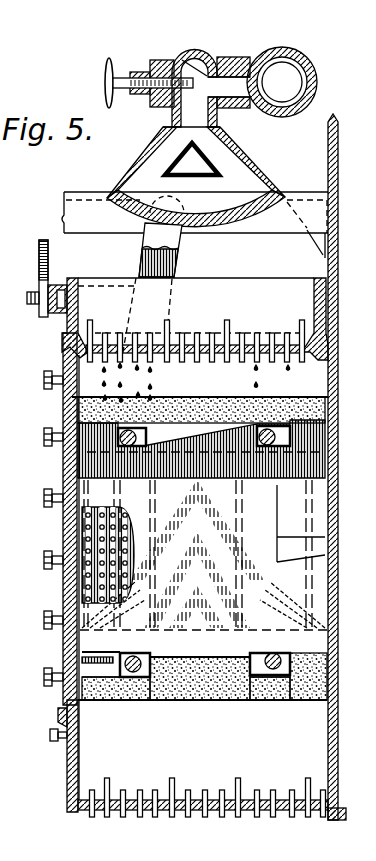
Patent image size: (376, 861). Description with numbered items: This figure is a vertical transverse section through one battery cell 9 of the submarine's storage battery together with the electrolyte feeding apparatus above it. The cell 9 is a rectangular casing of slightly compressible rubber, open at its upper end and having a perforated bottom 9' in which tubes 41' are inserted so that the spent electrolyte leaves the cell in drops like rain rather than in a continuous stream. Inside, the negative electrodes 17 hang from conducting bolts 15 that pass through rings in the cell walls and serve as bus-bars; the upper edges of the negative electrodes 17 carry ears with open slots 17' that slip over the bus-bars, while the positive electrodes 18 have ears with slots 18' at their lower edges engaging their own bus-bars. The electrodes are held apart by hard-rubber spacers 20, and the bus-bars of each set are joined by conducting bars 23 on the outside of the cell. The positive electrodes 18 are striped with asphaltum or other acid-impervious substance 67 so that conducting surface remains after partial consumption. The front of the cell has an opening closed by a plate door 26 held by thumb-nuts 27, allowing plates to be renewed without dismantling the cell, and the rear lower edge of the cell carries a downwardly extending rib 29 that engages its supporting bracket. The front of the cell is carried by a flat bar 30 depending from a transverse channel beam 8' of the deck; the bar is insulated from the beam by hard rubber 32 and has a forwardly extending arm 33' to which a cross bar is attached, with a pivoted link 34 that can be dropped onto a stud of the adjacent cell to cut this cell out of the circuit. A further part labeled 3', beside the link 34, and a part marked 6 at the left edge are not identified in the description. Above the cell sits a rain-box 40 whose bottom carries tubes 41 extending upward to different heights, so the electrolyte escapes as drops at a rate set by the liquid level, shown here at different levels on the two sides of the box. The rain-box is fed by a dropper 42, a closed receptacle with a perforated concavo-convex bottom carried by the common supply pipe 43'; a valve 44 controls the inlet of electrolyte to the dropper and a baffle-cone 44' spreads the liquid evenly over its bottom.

The valve 44 is at (156, 70).
The common supply pipe 43' is at (280, 79).
The baffle-cone 44' is at (158, 158).
The dropper 42 is at (247, 148).
The transverse channel beams 8' is at (170, 224).
The hard rubber covering 32 is at (24, 278).
The link 34 is at (47, 258).
The forwardly extending arm 33' is at (81, 304).
The flat bars 30 is at (176, 261).
The rain-box 40 is at (195, 319).
The tubes 41 is at (195, 354).
The arm 3' is at (25, 301).
The negative electrodes 17 is at (197, 437).
The open slots 17' is at (218, 409).
The bolts 15 is at (43, 440).
The conducting bars 23 is at (44, 499).
The positive electrodes 18 is at (203, 554).
The plate door 26 is at (67, 531).
The asphaltum or acid-impervious substance 67 is at (326, 540).
The spacers 20 is at (80, 581).
The slots 18' is at (156, 682).
The casing 6 is at (50, 682).
The thumb-nuts 27 is at (57, 722).
The tubes 41' is at (208, 787).
The perforated bottom 9' is at (50, 756).
The cell 9 is at (169, 472).
The downwardly extending rib 29 is at (342, 813).